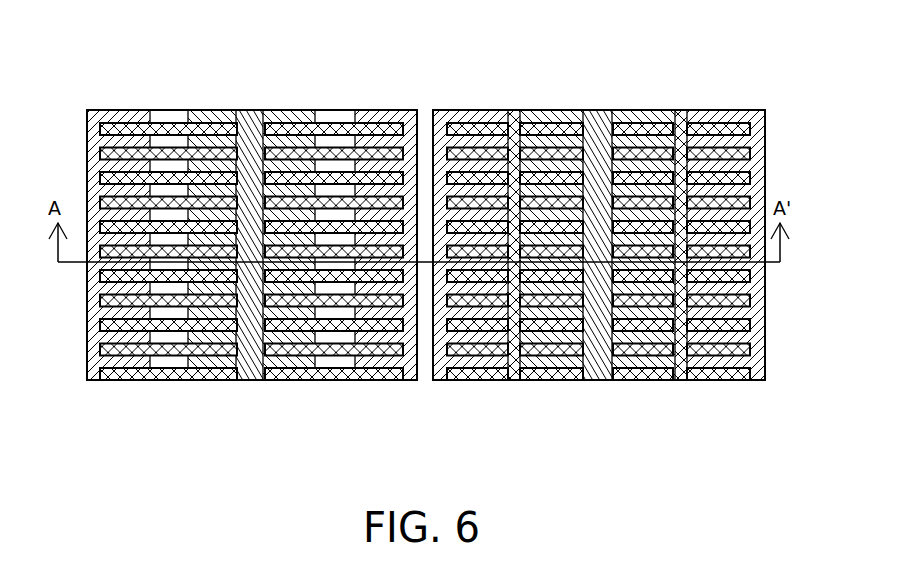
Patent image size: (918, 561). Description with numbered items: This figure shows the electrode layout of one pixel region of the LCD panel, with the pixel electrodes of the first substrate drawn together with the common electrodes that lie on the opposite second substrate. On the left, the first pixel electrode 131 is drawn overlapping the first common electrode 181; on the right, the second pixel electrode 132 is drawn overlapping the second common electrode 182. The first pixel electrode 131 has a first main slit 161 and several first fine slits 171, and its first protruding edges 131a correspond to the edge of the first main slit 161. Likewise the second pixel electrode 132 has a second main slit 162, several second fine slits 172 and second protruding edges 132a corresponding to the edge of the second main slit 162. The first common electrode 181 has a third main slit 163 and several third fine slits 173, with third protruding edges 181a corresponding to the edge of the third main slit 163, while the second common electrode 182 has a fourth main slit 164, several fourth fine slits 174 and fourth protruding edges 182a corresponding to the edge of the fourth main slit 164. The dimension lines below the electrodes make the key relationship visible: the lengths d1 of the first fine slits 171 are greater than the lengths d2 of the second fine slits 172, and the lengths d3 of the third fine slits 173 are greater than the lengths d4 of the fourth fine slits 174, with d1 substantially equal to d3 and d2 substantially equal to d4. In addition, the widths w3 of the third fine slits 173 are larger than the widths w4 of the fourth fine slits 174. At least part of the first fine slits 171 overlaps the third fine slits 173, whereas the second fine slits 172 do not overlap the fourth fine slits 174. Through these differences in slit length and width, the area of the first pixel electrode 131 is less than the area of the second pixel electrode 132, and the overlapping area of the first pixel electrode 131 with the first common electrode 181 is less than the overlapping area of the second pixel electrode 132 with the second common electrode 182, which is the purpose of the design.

The first pixel electrode 131 is at (247, 380).
The first protruding edges 131a is at (102, 348).
The second pixel electrode 132 is at (612, 380).
The second protruding edges 132a is at (765, 352).
The first main slit 161 is at (94, 307).
The second main slit 162 is at (756, 307).
The first fine slits 171 is at (122, 335).
The second fine slits 172 is at (727, 335).
The third main slit 163 is at (261, 116).
The fourth main slit 164 is at (613, 111).
The third fine slits 173 is at (243, 120).
The fourth fine slits 174 is at (597, 128).
The first common electrode 181 is at (105, 108).
The third protruding edges 181a is at (168, 150).
The second common electrode 182 is at (460, 117).
The fourth protruding edges 182a is at (530, 120).
The widths of the third fine slits w3 is at (100, 147).
The widths of the fourth fine slits w4 is at (605, 148).
The lengths of the first fine slits d1 is at (100, 380).
The lengths of the second fine slits d2 is at (447, 380).
The lengths of the third fine slits d3 is at (266, 380).
The lengths of the fourth fine slits d4 is at (521, 380).